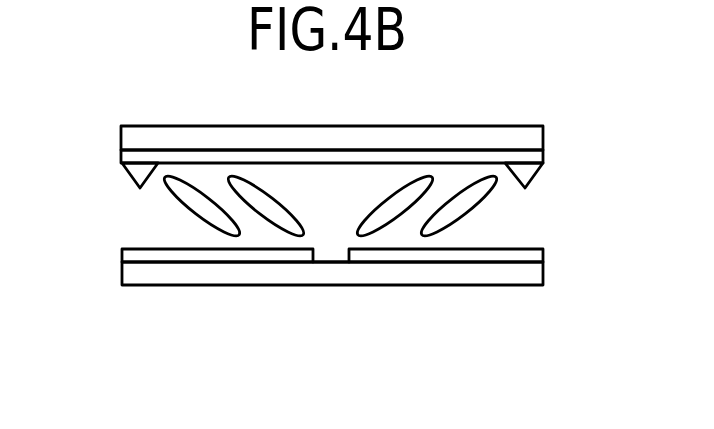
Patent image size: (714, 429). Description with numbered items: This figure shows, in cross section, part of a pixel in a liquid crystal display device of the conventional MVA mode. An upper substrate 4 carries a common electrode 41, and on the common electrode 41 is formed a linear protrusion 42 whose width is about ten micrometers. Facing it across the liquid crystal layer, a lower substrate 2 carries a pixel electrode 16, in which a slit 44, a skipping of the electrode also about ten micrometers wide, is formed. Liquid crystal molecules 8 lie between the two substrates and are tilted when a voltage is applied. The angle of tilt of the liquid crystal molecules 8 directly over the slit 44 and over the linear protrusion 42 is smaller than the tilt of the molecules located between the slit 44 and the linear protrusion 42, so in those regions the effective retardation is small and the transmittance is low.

The substrate 2 is at (538, 272).
The counter substrate 4 is at (538, 140).
The liquid crystal molecules 8 is at (463, 205).
The pixel electrode 16 is at (538, 257).
The common electrode 41 is at (538, 153).
The linear protrusion 42 is at (137, 172).
The slit 44 is at (329, 266).